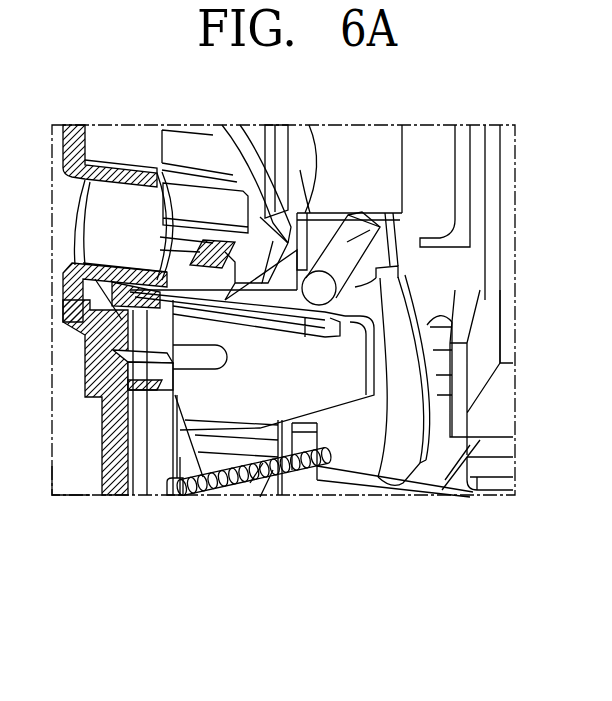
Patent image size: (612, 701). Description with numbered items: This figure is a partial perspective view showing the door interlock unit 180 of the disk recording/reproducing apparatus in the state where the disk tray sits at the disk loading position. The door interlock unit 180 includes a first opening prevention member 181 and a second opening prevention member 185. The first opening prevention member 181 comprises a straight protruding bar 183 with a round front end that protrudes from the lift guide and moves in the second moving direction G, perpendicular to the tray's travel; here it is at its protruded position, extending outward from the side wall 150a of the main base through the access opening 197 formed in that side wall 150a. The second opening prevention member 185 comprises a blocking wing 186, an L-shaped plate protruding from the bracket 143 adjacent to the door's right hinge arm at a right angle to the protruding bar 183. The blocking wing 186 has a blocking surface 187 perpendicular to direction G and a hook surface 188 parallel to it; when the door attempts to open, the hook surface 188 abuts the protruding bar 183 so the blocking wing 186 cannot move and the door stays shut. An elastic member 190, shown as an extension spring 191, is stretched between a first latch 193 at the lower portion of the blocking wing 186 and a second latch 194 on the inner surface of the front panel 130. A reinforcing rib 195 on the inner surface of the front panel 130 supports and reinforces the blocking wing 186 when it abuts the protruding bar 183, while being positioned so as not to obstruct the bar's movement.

The front panel 130 is at (90, 467).
The bracket 143 is at (201, 127).
The access opening 197 is at (318, 127).
The side wall 150a is at (373, 125).
The second moving direction G is at (358, 214).
The protruding bar 183 is at (403, 227).
The hook surface 188 is at (407, 257).
The blocking surface 187 is at (428, 317).
The blocking wing 186 is at (413, 403).
The second opening prevention member 185 is at (433, 447).
The first opening prevention member 181 is at (372, 303).
The elastic member 190 is at (303, 483).
The door interlock unit 180 is at (344, 448).
The extension spring 191 is at (262, 482).
The reinforcing rib 195 is at (240, 407).
The second latch 194 is at (170, 482).
The first latch 193 is at (332, 443).